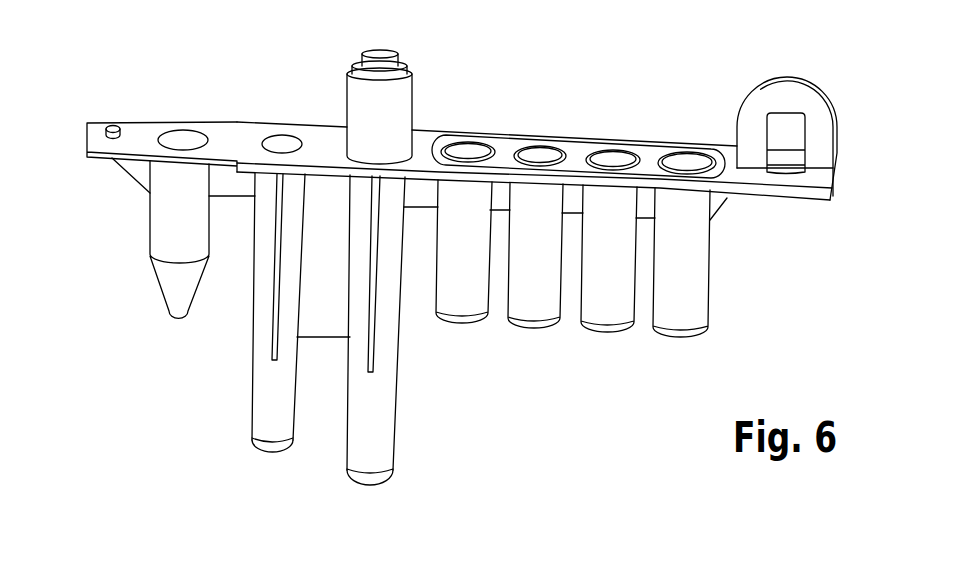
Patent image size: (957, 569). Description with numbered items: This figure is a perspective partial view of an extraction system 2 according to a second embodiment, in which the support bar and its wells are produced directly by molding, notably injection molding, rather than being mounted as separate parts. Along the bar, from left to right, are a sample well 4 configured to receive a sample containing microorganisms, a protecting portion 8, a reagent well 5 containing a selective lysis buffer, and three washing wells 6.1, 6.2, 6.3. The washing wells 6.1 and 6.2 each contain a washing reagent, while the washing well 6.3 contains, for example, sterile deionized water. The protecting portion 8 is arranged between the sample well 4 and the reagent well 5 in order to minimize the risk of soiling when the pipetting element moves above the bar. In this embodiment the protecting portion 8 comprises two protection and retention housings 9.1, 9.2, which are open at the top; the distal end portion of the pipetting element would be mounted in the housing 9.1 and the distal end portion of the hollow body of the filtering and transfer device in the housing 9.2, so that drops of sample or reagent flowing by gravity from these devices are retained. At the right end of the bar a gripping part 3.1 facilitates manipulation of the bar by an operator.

The extraction system 2 is at (670, 100).
The gripping part 3.1 is at (806, 102).
The sample well 4 is at (173, 220).
The reagent well 5 is at (465, 302).
The washing well 6.1 is at (530, 303).
The washing well 6.2 is at (613, 305).
The washing well 6.3 is at (688, 258).
The protecting portion 8 is at (262, 350).
The protection and retention housing 9.1 is at (267, 428).
The protection and retention housing 9.2 is at (370, 458).